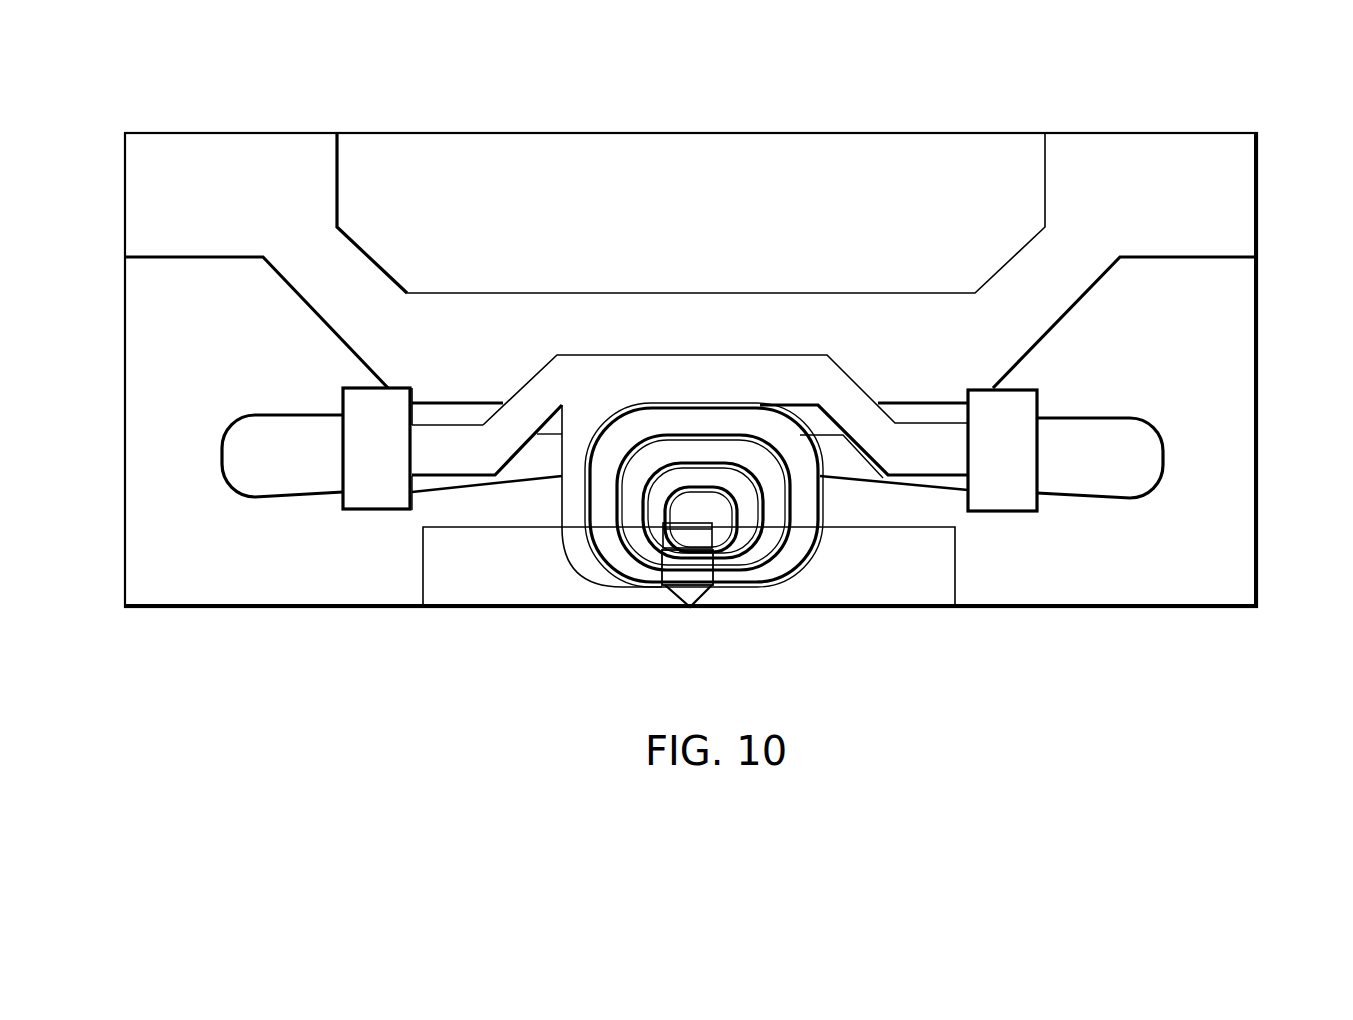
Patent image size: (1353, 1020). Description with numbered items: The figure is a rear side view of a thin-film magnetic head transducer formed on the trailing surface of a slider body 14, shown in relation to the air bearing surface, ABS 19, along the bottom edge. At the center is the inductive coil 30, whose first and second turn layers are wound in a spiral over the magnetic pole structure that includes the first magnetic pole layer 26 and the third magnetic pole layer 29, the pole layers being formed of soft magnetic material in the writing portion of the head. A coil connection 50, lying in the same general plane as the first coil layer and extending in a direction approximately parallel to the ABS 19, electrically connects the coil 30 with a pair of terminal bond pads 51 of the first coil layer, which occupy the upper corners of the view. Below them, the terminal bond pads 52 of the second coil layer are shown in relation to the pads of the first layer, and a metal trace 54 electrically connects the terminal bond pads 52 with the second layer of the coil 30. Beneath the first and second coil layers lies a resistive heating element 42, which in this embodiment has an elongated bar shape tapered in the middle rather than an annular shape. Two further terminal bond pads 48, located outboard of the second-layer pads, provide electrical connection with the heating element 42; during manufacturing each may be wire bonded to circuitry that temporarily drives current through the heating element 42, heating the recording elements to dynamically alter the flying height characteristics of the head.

The slider body 14 is at (1262, 470).
The ABS 19 is at (1055, 610).
The first magnetic pole layer 26 is at (841, 585).
The third magnetic pole layer 29 is at (685, 575).
The coil 30 is at (762, 552).
The resistive heating element 42 is at (537, 468).
The terminal bond pads 48 is at (290, 432).
The coil connection 50 is at (852, 378).
The terminal bond pads of the C1 layer 51 is at (157, 196).
The terminal bond pads of the C2 layer 52 is at (378, 500).
The metal trace 54 is at (620, 354).